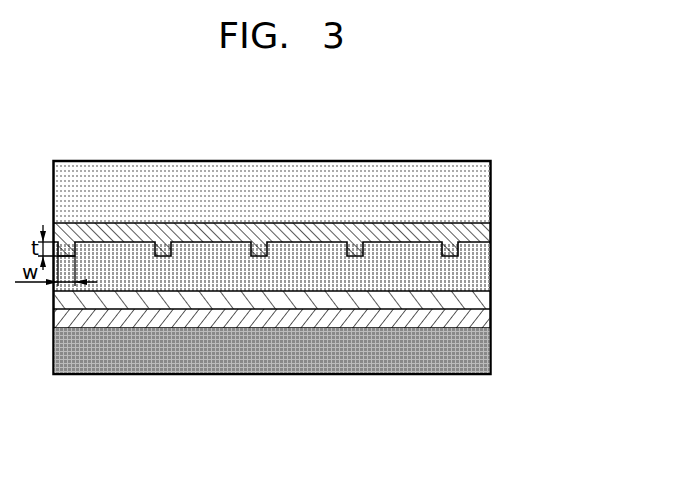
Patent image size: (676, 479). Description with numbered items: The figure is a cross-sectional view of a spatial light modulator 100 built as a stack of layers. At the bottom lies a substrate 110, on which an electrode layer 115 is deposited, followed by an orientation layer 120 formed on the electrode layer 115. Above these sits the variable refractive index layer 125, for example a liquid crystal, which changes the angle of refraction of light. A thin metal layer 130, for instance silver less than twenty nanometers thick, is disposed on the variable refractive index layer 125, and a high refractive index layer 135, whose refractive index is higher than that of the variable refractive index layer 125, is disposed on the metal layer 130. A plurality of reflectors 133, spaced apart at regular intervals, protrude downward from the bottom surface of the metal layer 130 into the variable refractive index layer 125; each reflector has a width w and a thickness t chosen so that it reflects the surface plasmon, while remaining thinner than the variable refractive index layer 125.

The spatial light modulator 100 is at (462, 141).
The substrate 110 is at (367, 357).
The electrode layer 115 is at (275, 320).
The orientation layer 120 is at (188, 300).
The variable refractive index layer 125 is at (483, 283).
The metal layer 130 is at (488, 233).
The reflectors 133 is at (458, 253).
The high refractive index layer 135 is at (483, 195).